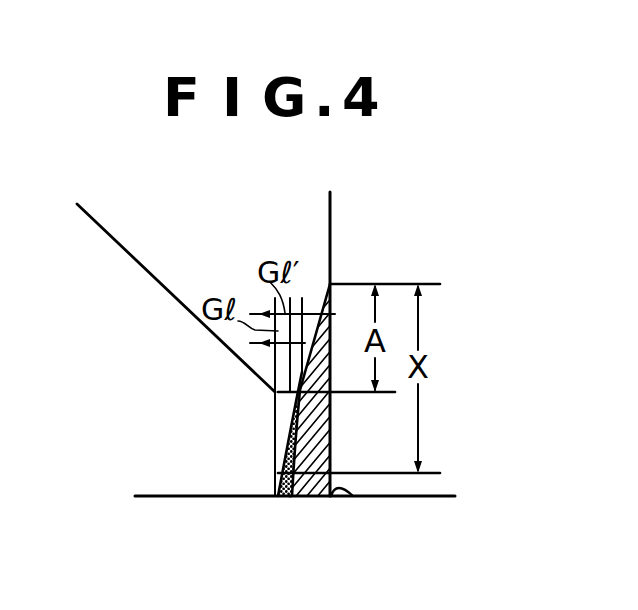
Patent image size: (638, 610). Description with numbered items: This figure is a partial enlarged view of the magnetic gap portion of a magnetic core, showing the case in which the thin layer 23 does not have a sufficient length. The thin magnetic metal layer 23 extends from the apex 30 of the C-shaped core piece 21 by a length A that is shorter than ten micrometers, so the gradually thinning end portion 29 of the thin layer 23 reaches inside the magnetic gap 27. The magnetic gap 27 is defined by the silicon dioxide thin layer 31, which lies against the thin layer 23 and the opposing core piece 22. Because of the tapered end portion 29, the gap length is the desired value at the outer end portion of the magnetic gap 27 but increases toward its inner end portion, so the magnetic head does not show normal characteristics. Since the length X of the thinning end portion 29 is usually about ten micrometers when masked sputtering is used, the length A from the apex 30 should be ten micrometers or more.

The C-shaped core piece 21 is at (170, 489).
The second core half 22 is at (410, 483).
The thin layer 23 is at (353, 496).
The magnetic gap 27 is at (299, 497).
The end portion 29 is at (322, 386).
The apex 30 is at (272, 394).
The SiO2 thin layer 31 is at (283, 498).